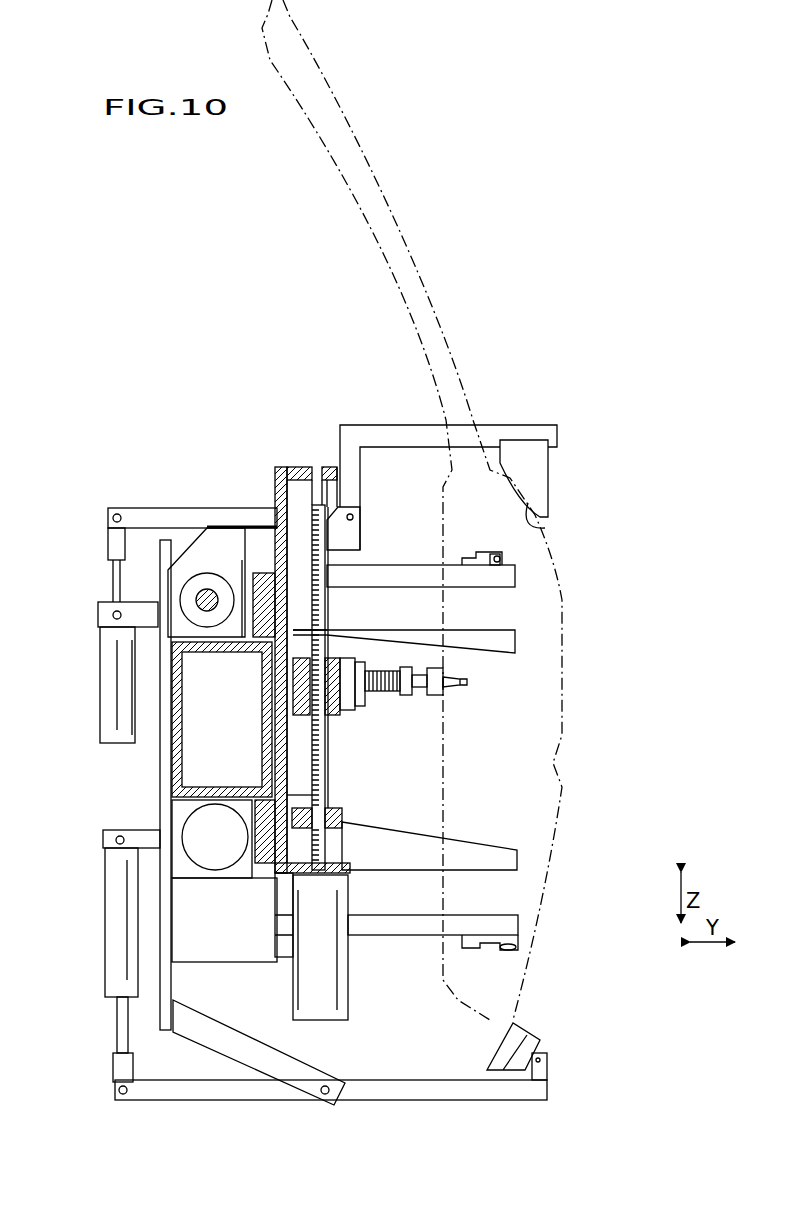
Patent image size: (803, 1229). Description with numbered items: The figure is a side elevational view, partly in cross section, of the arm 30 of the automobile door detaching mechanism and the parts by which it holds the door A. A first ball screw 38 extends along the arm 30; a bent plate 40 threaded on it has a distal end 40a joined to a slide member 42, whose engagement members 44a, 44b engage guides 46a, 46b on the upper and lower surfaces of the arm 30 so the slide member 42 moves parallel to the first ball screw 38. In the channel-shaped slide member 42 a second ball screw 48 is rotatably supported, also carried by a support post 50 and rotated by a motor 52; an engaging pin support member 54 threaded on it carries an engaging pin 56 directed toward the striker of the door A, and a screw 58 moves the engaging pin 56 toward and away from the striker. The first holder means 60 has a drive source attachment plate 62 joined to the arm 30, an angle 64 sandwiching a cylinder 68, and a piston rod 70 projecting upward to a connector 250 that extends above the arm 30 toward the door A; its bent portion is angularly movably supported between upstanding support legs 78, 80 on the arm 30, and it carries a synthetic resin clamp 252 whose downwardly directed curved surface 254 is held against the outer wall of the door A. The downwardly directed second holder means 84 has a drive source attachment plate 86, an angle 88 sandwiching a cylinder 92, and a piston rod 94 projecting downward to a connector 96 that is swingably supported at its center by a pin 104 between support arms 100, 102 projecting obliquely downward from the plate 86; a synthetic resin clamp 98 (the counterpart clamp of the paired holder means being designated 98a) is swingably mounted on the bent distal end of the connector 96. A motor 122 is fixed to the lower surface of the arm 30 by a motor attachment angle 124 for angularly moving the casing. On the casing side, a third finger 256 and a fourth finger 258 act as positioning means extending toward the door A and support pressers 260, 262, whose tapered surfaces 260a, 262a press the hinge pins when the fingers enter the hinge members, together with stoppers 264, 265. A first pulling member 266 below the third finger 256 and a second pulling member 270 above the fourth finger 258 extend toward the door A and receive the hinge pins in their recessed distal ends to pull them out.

The door A is at (417, 272).
The arm 30 is at (195, 645).
The first ball screw 38 is at (222, 615).
The plate 40 is at (210, 540).
The bent distal end 40a is at (263, 537).
The slide member 42 is at (286, 467).
The engagement member 44a is at (262, 585).
The engagement member 44b is at (260, 860).
The guide 46a is at (325, 623).
The guide 46b is at (305, 795).
The second ball screw 48 is at (318, 733).
The support post 50 is at (342, 813).
The motor 52 is at (330, 1005).
The engaging pin support member 54 is at (360, 710).
The engaging pin 56 is at (455, 688).
The screw 58 is at (413, 695).
The first holder means 60 is at (125, 495).
The drive source attachment plate 62 is at (167, 680).
The angle 64 is at (107, 615).
The cylinder 68 is at (115, 660).
The piston rod 70 is at (115, 588).
The support leg 78 is at (348, 538).
The support leg 80 is at (353, 517).
The second holder means 84 is at (105, 1075).
The drive source attachment plate 86 is at (172, 768).
The angle 88 is at (140, 830).
The cylinder 92 is at (115, 935).
The piston rod 94 is at (118, 1025).
The connector 96 is at (397, 1100).
The clamp 98 is at (571, 1039).
The stopper face 98a is at (535, 1040).
The support arm 100 is at (232, 1045).
The support arm 102 is at (224, 934).
The pin 104 is at (340, 1077).
The motor 122 is at (220, 855).
The motor attachment angle 124 is at (185, 872).
The connector 250 is at (163, 517).
The clamp 252 is at (540, 472).
The curved surface 254 is at (543, 524).
The third finger 256 is at (420, 575).
The fourth finger 258 is at (398, 935).
The presser 260 is at (478, 552).
The tapered surface 260a is at (503, 556).
The presser 262 is at (483, 950).
The tapered surface 262a is at (516, 946).
The stopper 264 is at (501, 562).
The stopper 265 is at (505, 951).
The first pulling member 266 is at (500, 650).
The second pulling member 270 is at (470, 850).